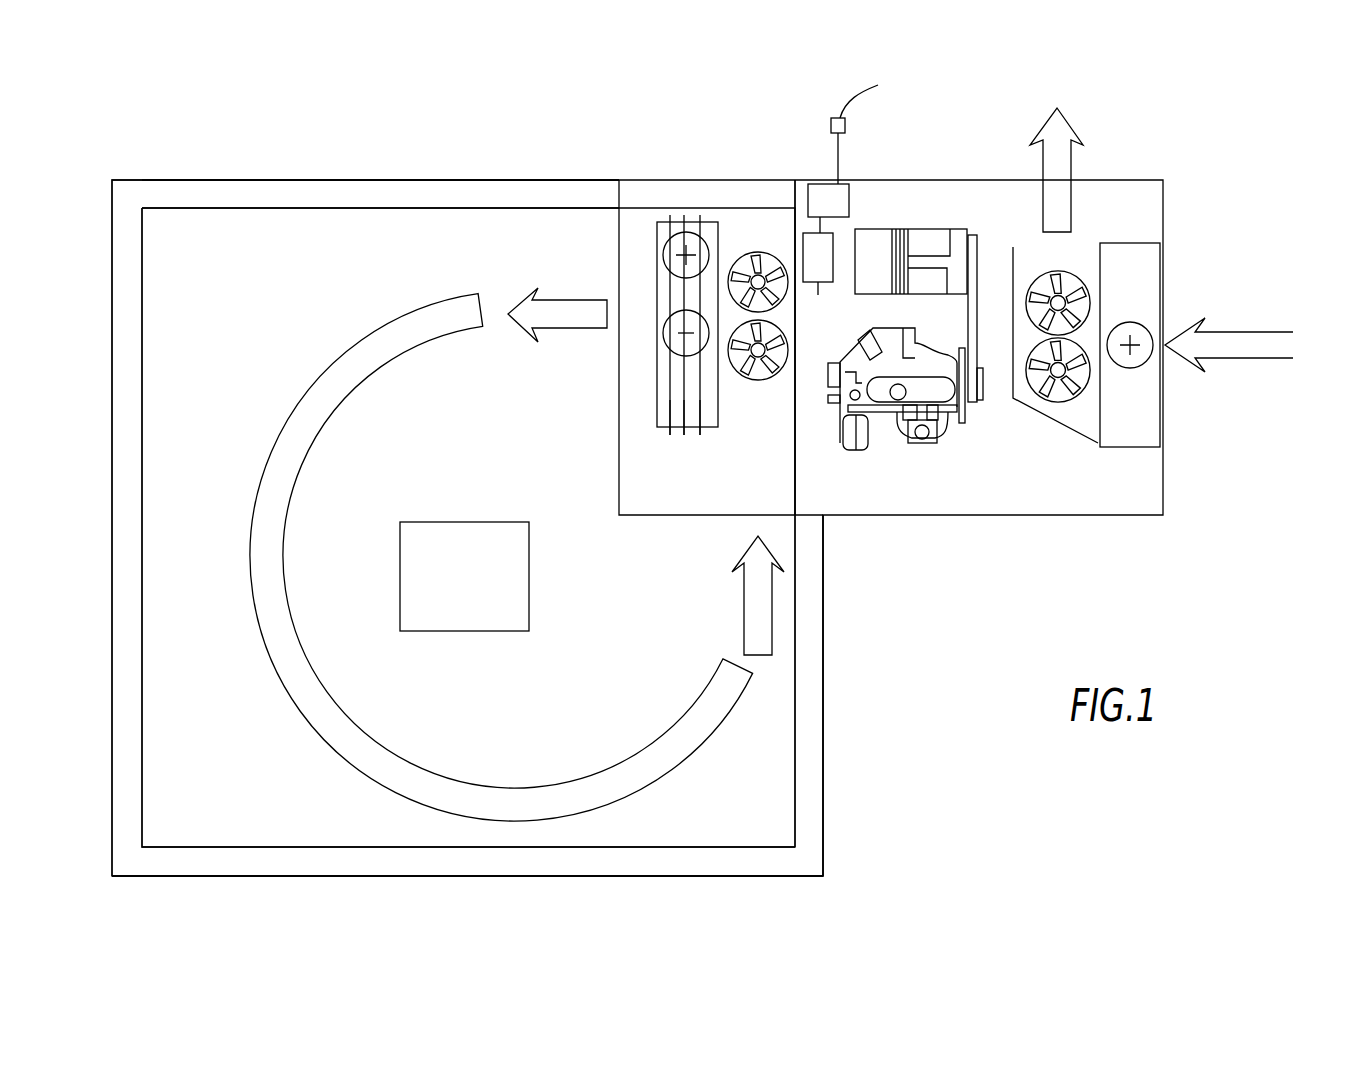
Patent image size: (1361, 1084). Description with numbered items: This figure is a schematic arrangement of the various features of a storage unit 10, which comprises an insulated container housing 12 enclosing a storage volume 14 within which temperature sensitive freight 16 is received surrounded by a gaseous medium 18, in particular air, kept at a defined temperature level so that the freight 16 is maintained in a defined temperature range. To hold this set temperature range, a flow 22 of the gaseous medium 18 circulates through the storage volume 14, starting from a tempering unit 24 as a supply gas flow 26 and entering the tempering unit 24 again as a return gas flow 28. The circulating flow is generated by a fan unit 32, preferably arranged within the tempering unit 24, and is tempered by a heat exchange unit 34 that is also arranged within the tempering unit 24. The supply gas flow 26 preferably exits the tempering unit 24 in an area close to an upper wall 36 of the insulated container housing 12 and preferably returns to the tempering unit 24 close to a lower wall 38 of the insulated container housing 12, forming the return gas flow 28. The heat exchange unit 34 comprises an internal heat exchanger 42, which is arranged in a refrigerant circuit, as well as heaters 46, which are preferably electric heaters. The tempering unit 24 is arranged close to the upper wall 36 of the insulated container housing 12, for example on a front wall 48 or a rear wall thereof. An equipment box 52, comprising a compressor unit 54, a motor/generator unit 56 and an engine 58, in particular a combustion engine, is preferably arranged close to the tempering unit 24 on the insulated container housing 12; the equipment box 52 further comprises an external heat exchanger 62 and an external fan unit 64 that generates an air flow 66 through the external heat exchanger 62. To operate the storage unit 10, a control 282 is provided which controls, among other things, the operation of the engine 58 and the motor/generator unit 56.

The storage unit 10 is at (507, 152).
The insulated container housing 12 is at (468, 202).
The storage volume 14 is at (330, 240).
The freight 16 is at (465, 540).
The gaseous medium 18 is at (213, 252).
The flow 22 is at (315, 710).
The tempering unit 24 is at (693, 203).
The supply gas flow 26 is at (573, 310).
The return gas flow 28 is at (755, 607).
The fan unit 32 is at (760, 238).
The heat exchange unit 34 is at (677, 217).
The upper wall 36 is at (250, 193).
The lower wall 38 is at (478, 862).
The internal heat exchanger 42 is at (710, 413).
The heaters 46 is at (690, 432).
The front wall 48 is at (810, 735).
The equipment box 52 is at (968, 477).
The compressor unit 54 is at (937, 238).
The motor/generator unit 56 is at (876, 240).
The engine 58 is at (892, 393).
The external heat exchanger 62 is at (1122, 392).
The external fan unit 64 is at (1043, 388).
The air flow 66 is at (1062, 167).
The control 282 is at (820, 200).